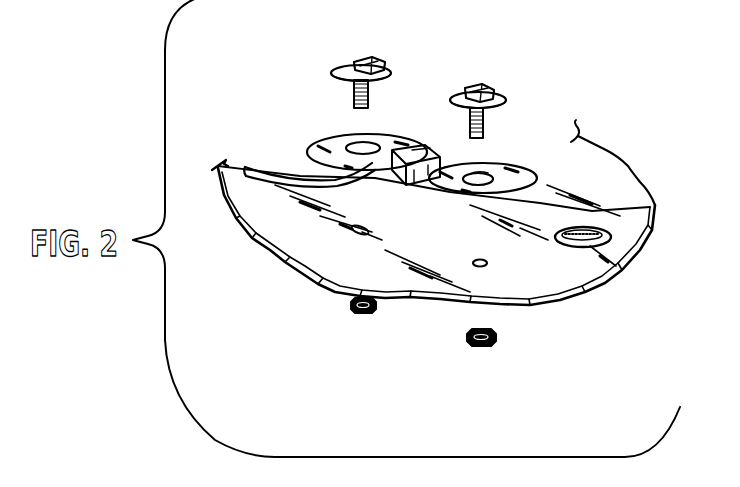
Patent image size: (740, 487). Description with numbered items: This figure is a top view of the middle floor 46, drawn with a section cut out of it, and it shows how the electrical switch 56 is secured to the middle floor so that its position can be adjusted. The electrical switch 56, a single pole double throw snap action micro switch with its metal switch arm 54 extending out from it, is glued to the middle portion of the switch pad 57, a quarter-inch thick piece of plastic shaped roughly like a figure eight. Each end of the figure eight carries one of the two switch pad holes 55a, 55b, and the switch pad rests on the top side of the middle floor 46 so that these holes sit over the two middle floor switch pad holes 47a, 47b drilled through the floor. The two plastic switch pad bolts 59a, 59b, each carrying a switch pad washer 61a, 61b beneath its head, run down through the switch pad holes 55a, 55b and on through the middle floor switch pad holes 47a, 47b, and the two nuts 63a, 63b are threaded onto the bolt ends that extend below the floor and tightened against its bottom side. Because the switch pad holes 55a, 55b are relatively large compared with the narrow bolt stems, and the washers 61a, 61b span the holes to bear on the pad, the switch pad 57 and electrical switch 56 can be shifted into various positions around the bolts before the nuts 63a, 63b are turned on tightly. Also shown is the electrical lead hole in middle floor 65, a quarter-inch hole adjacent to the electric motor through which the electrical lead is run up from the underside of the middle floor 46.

The middle floor 46 is at (433, 212).
The middle floor switch pad hole 47a is at (347, 224).
The middle floor switch pad hole 47b is at (487, 262).
The switch arm 54 is at (263, 160).
The switch pad hole 55a is at (363, 141).
The switch pad hole 55b is at (537, 172).
The electrical switch 56 is at (405, 143).
The switch pad 57 is at (483, 168).
The switch pad bolt 59a is at (363, 60).
The switch pad bolt 59b is at (481, 90).
The switch pad washer 61a is at (350, 72).
The switch pad washer 61b is at (500, 95).
The nut 63a is at (495, 342).
The nut 63b is at (350, 303).
The electrical lead hole in middle floor 65 is at (593, 228).